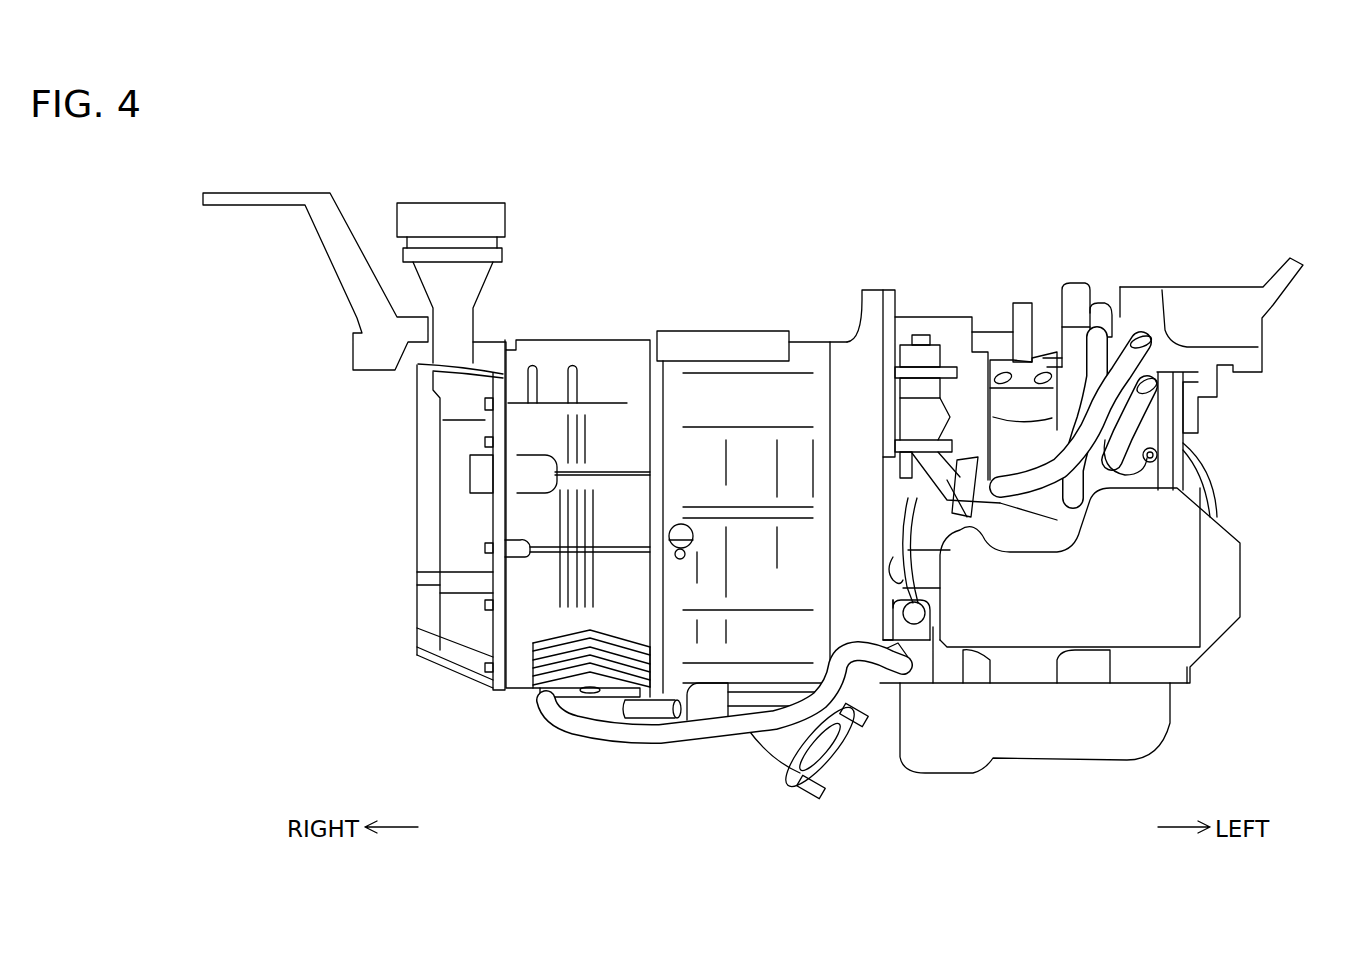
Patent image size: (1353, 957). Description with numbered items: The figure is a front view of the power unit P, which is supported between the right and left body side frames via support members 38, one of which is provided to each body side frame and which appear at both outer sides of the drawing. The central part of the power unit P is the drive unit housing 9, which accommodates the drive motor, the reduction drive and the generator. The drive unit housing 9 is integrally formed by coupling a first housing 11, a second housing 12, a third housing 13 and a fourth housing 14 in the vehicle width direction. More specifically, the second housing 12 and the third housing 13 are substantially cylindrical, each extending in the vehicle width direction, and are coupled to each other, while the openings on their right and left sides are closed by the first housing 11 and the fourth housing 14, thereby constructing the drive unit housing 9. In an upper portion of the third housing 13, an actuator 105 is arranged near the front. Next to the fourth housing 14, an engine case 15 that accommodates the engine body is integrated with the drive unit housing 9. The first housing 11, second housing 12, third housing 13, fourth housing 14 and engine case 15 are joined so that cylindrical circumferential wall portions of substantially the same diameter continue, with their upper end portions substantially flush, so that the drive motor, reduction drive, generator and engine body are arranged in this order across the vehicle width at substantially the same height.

The drive unit housing 9 is at (513, 700).
The first housing 11 is at (417, 505).
The second housing 12 is at (588, 340).
The third housing 13 is at (808, 340).
The fourth housing 14 is at (874, 340).
The engine case 15 is at (995, 333).
The support member 38 is at (332, 255).
The actuator 105 is at (690, 340).
The power unit P is at (1125, 218).